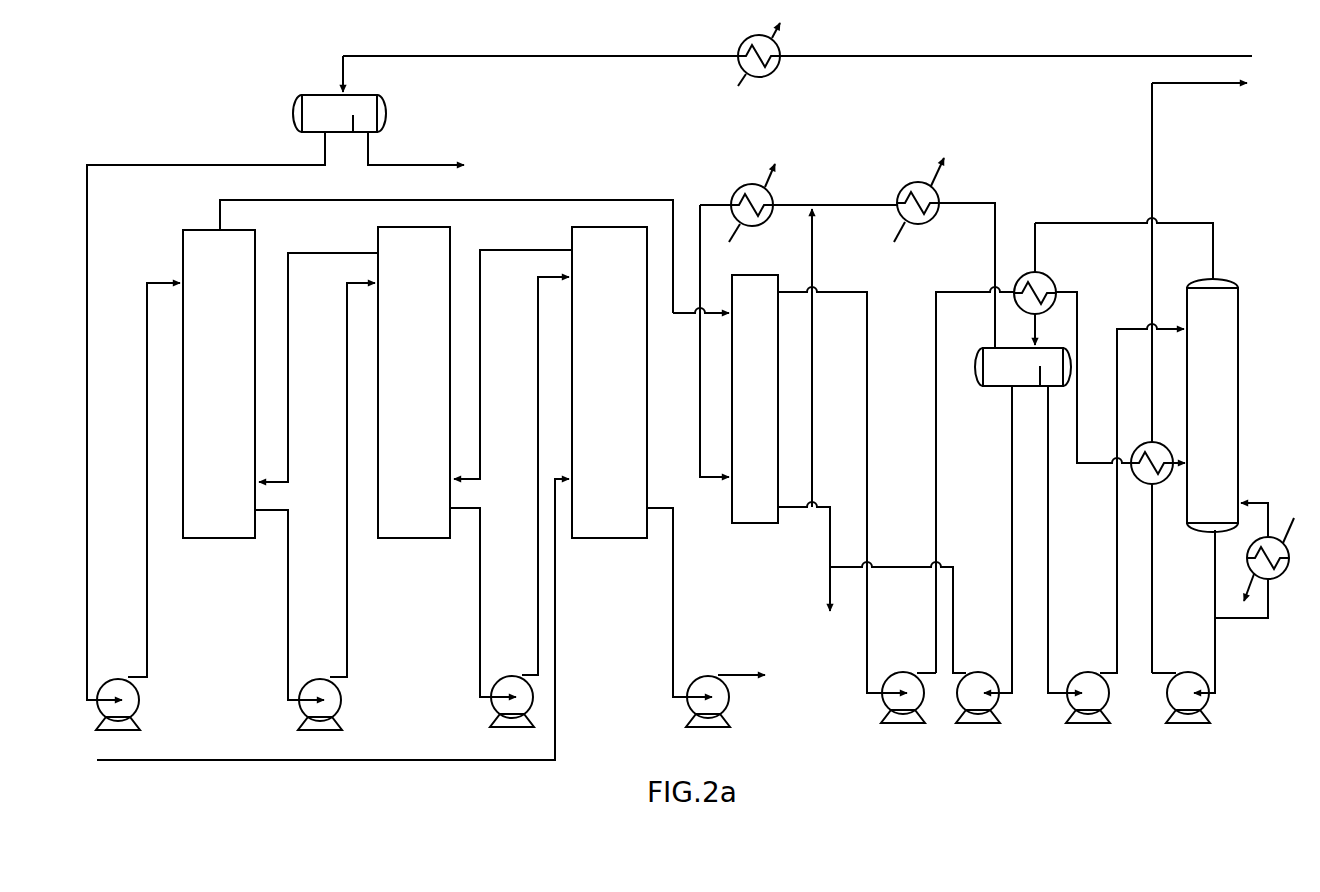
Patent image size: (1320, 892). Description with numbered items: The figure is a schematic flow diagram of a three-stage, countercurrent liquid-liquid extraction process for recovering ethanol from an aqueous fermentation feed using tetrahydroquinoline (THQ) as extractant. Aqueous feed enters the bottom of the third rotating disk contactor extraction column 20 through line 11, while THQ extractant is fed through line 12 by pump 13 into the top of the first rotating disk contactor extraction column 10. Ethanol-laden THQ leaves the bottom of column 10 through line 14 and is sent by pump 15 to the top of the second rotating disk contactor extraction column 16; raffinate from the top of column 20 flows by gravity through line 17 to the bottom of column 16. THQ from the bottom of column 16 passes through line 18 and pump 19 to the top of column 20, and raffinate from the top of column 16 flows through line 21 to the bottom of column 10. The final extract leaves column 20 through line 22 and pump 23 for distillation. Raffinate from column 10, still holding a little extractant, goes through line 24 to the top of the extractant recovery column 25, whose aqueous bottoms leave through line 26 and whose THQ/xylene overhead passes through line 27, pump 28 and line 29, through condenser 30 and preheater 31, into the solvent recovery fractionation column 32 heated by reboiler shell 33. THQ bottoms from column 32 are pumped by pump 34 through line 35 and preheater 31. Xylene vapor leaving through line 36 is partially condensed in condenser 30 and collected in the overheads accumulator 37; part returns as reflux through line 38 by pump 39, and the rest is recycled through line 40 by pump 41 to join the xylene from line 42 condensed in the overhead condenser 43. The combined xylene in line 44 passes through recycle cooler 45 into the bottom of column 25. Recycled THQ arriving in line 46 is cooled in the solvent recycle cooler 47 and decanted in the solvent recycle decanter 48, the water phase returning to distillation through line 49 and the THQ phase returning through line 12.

The first rotating disk contactor extraction column 10 is at (233, 392).
The line 11 is at (222, 758).
The line 12 is at (87, 373).
The pump 13 is at (139, 700).
The line 14 is at (288, 593).
The pump 15 is at (341, 703).
The second rotating disk contactor extraction column 16 is at (428, 392).
The line 17 is at (480, 380).
The line 18 is at (480, 600).
The pump 19 is at (495, 712).
The third rotating disk contactor extraction column 20 is at (621, 392).
The line 21 is at (288, 385).
The line 22 is at (673, 607).
The pump 23 is at (730, 705).
The line 24 is at (535, 197).
The extractant recovery column 25 is at (769, 392).
The line 26 is at (820, 505).
The line 27 is at (867, 383).
The pump 28 is at (885, 671).
The line 29 is at (936, 478).
The condenser 30 is at (1048, 276).
The preheater 31 is at (1143, 445).
The solvent recovery fractionation column 32 is at (1227, 408).
The reboiler shell 33 is at (1281, 580).
The pump 34 is at (1201, 672).
The line 35 is at (1149, 645).
The line 36 is at (1190, 223).
The overheads accumulator 37 is at (994, 388).
The line 38 is at (1048, 517).
The pump 39 is at (1075, 671).
The line 40 is at (1012, 506).
The pump 41 is at (990, 671).
The line 42 is at (985, 203).
The overhead condenser 43 is at (904, 186).
The line 44 is at (803, 204).
The recycle cooler 45 is at (740, 186).
The line 46 is at (1033, 58).
The solvent recycle cooler 47 is at (770, 72).
The solvent recycle decanter 48 is at (313, 95).
The line 49 is at (412, 163).